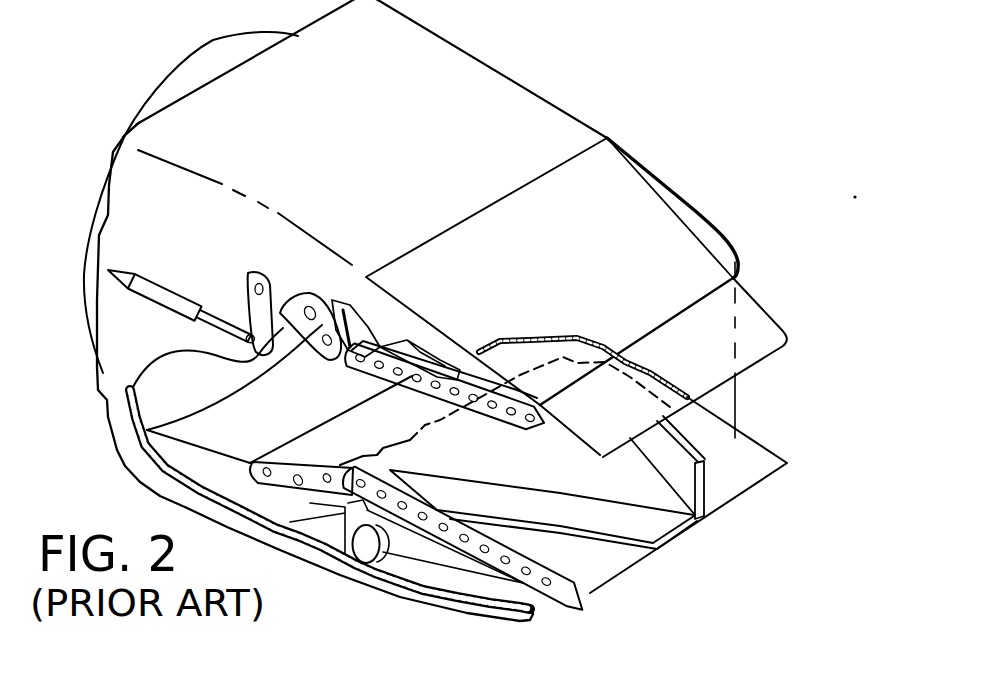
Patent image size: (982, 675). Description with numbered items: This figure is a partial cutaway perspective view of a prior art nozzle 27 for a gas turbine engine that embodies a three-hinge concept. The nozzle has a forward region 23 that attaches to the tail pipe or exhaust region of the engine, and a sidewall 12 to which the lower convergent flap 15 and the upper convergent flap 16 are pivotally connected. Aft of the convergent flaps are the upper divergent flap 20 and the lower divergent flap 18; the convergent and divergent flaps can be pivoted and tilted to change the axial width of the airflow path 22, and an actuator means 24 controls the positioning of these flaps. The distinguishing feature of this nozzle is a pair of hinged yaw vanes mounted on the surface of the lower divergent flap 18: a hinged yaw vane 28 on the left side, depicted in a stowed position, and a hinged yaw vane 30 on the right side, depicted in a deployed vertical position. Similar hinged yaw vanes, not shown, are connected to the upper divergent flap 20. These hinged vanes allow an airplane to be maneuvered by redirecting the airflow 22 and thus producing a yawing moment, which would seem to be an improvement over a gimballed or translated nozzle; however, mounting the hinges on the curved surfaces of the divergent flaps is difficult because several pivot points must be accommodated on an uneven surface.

The sidewall 12 is at (693, 210).
The lower convergent flap 15 is at (313, 450).
The upper convergent flap 16 is at (320, 374).
The lower divergent flap 18 is at (742, 461).
The upper divergent flap 20 is at (551, 430).
The airflow path 22 is at (713, 543).
The forward region 23 is at (218, 63).
The actuator means 24 is at (217, 323).
The prior art nozzle 27 is at (601, 118).
The hinged yaw vane 28 is at (605, 515).
The hinged yaw vane 30 is at (677, 462).